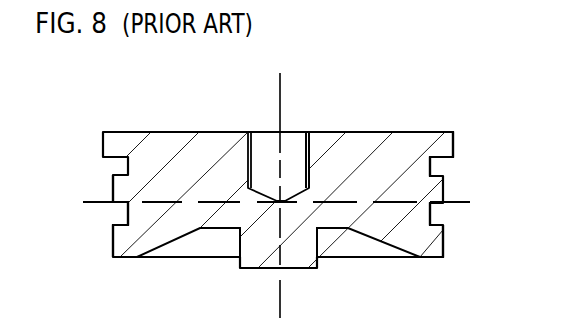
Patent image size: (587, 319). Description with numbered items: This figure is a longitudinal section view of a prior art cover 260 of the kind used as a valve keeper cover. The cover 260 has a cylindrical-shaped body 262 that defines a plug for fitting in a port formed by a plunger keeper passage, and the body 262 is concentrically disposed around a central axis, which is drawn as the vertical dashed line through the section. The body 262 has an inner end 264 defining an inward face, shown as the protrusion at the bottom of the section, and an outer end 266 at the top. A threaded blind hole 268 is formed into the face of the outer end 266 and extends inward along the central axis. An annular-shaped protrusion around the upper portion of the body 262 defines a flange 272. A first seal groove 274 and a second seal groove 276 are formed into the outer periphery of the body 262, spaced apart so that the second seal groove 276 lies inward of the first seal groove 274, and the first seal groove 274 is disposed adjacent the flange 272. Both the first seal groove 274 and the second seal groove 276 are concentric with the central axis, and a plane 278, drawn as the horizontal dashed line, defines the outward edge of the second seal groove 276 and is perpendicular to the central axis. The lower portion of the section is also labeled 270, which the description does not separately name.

The cover 260 is at (110, 92).
The cylindrical-shaped body 262 is at (168, 137).
The inner end 264 is at (252, 270).
The outer end 266 is at (228, 131).
The threaded blind hole 268 is at (308, 131).
The lower land 270 is at (445, 240).
The flange 272 is at (453, 143).
The first seal groove 274 is at (430, 167).
The second seal groove 276 is at (430, 215).
The plane 278 is at (105, 203).